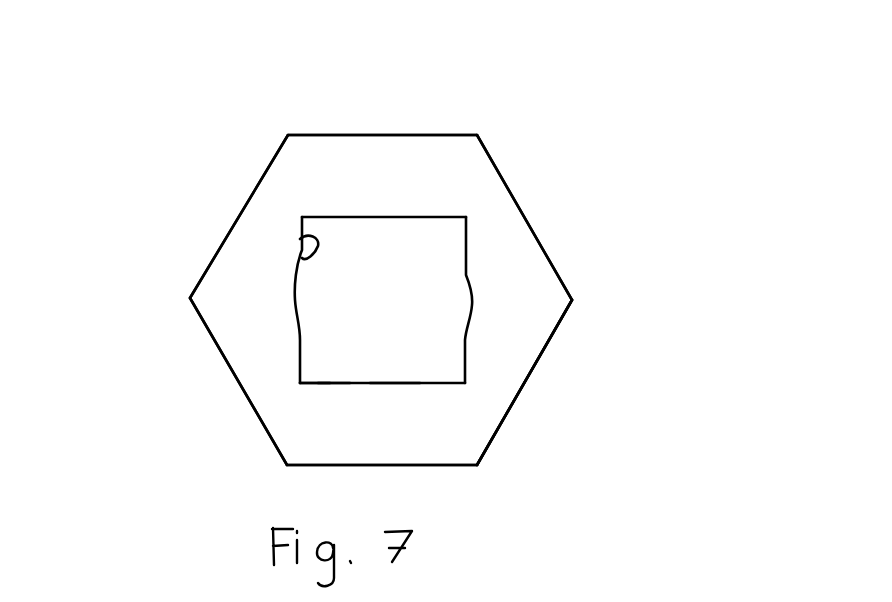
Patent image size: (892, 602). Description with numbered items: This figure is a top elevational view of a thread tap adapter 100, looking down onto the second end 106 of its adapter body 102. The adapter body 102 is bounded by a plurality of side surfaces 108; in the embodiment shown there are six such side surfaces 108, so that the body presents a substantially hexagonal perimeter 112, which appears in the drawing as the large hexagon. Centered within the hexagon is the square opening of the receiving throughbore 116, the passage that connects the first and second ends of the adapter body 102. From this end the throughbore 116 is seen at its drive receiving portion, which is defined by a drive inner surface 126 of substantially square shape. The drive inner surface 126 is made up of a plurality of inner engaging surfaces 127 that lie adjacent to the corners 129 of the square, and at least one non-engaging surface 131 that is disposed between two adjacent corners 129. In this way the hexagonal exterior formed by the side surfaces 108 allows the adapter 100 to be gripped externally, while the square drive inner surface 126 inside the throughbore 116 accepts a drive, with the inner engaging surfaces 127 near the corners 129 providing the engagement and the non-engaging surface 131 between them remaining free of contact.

The thread tap adapter 100 is at (168, 448).
The adapter body 102 is at (508, 417).
The second end 106 is at (467, 180).
The side surfaces 108 is at (263, 170).
The hexagonal perimeter 112 is at (535, 368).
The receiving throughbore 116 is at (407, 275).
The drive inner surface 126 is at (300, 239).
The inner engaging surfaces 127 is at (317, 384).
The corners 129 is at (300, 385).
The non-engaging surface 131 is at (388, 384).